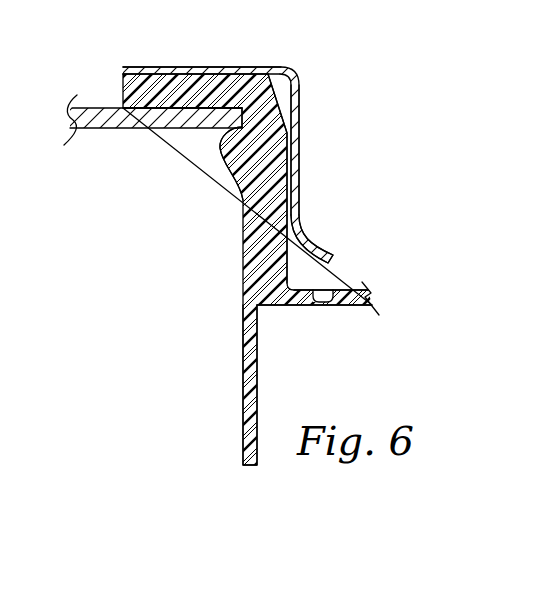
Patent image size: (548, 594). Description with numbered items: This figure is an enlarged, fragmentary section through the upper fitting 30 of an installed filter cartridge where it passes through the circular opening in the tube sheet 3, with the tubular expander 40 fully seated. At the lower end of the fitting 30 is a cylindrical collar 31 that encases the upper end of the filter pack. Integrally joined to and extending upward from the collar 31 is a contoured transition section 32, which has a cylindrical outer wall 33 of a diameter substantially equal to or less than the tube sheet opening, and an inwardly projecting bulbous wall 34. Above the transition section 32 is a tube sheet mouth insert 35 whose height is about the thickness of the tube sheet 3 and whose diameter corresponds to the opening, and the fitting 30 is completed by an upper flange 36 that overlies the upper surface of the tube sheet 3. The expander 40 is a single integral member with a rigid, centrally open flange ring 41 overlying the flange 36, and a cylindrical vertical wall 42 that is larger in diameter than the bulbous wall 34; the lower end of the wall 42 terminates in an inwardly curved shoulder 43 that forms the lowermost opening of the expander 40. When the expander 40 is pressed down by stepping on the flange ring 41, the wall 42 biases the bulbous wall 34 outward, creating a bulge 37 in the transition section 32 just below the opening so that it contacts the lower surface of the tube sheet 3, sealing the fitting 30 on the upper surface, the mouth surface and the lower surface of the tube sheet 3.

The tube sheet 3 is at (113, 129).
The fitting 30 is at (274, 244).
The cylindrical collar 31 is at (250, 390).
The contoured transition section 32 is at (272, 234).
The cylindrical outer wall 33 is at (243, 230).
The bulbous wall 34 is at (291, 178).
The tube sheet mouth insert 35 is at (240, 124).
The upper flange 36 is at (143, 90).
The bulge 37 is at (230, 153).
The tubular expander 40 is at (274, 153).
The flange ring 41 is at (182, 70).
The vertical wall 42 is at (297, 126).
The inwardly curved shoulder 43 is at (307, 250).